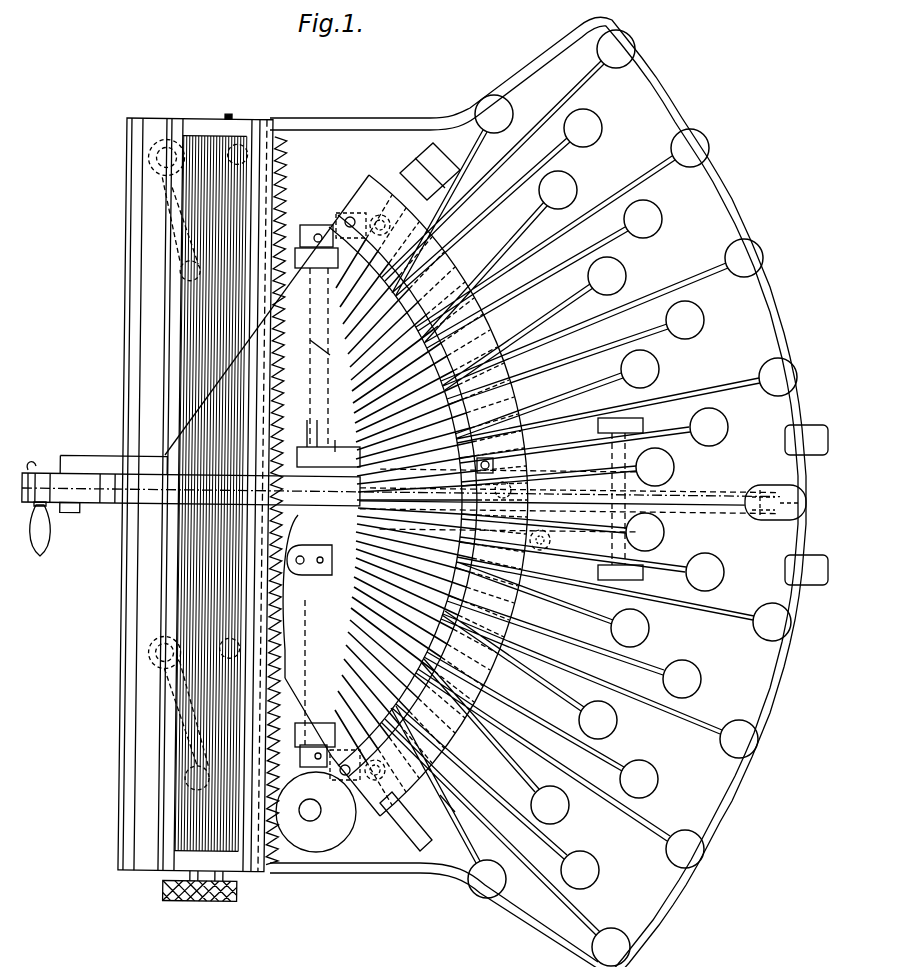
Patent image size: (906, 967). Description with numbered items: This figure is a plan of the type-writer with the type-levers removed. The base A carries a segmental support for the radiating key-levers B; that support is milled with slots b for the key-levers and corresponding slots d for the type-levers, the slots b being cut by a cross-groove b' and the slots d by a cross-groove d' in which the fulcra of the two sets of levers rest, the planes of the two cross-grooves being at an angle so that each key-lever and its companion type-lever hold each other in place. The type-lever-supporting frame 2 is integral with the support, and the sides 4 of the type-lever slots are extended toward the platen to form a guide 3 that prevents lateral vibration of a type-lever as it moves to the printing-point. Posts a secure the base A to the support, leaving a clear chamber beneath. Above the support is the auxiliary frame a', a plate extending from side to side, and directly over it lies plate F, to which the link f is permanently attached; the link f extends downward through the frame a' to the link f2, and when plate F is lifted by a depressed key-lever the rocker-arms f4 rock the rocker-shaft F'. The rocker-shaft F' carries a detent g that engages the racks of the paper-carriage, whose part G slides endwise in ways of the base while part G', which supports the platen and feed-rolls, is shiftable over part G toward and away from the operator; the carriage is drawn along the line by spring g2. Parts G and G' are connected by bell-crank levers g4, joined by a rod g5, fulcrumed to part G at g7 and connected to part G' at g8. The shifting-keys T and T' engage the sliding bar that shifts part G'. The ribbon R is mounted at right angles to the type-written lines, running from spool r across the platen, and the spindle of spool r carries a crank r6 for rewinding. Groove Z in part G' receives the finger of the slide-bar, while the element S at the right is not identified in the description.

The base A is at (485, 492).
The key-levers B is at (589, 498).
The plate F is at (428, 477).
The rocker-shaft F' is at (325, 310).
The link f is at (494, 478).
The link f2 is at (349, 220).
The rocker-arm f4 is at (304, 758).
The part of paper-carriage G is at (182, 492).
The part of paper-carriage G' is at (219, 499).
The detent g is at (291, 596).
The spring g2 is at (316, 812).
The bell-crank levers g4 is at (168, 210).
The rod g5 is at (238, 148).
The fulcrum of bell-crank levers g7 is at (160, 160).
The connection of bell-crank levers g8 is at (185, 272).
The ribbon R is at (401, 494).
The spool r is at (28, 461).
The crank r6 is at (50, 530).
The type-lever-supporting frame 2 is at (23, 487).
The guide 3 is at (308, 698).
The sides of type-lever-receiving slots 4 is at (312, 352).
The posts a is at (586, 499).
The auxiliary frame a' is at (395, 496).
The slots b is at (454, 818).
The cross-groove b' is at (416, 497).
The slots d is at (317, 554).
The cross-groove d' is at (337, 430).
The space key S is at (792, 503).
The shifting-key T is at (806, 422).
The shifting-key T' is at (808, 584).
The groove Z is at (246, 875).